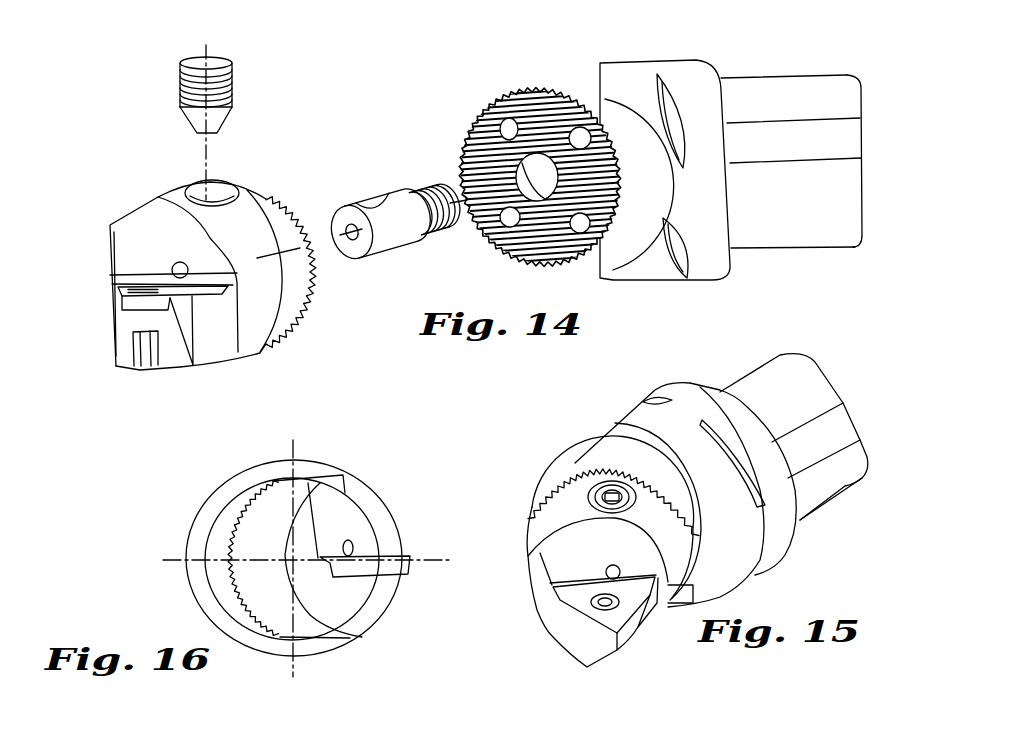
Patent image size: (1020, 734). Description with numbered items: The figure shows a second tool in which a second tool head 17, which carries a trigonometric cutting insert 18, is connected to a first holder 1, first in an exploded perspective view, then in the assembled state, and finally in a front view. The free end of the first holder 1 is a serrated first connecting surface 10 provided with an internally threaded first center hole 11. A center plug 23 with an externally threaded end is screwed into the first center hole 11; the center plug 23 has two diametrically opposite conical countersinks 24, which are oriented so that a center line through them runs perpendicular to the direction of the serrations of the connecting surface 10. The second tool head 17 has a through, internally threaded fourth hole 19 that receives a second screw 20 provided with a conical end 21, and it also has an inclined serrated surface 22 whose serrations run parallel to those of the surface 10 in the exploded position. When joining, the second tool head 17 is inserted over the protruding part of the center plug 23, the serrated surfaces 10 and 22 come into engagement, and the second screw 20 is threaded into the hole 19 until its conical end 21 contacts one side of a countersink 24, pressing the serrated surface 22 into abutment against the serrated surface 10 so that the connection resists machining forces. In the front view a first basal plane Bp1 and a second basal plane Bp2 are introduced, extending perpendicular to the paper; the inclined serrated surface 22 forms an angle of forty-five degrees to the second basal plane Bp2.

In FIG. 14, the first holder 1 is at (686, 50).
In FIG. 14, the first connecting surface 10 is at (540, 145).
In FIG. 14, the first center hole 11 is at (540, 157).
In FIG. 14, the second tool head 17 is at (195, 255).
In FIG. 14, the trigonometric cutting insert 18 is at (118, 285).
In FIG. 14, the fourth hole 19 is at (228, 183).
In FIG. 14, the second screw 20 is at (187, 107).
In FIG. 14, the conical end 21 is at (193, 117).
In FIG. 14, the inclined serrated surface 22 is at (303, 197).
In FIG. 14, the center plug 23 is at (400, 192).
In FIG. 14, the conical countersinks 24 is at (370, 205).
In FIG. 16, the first basal plane Bp1 is at (427, 558).
In FIG. 16, the second basal plane Bp2 is at (292, 443).